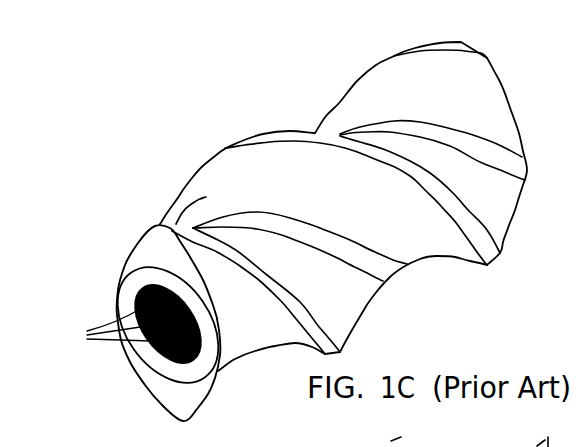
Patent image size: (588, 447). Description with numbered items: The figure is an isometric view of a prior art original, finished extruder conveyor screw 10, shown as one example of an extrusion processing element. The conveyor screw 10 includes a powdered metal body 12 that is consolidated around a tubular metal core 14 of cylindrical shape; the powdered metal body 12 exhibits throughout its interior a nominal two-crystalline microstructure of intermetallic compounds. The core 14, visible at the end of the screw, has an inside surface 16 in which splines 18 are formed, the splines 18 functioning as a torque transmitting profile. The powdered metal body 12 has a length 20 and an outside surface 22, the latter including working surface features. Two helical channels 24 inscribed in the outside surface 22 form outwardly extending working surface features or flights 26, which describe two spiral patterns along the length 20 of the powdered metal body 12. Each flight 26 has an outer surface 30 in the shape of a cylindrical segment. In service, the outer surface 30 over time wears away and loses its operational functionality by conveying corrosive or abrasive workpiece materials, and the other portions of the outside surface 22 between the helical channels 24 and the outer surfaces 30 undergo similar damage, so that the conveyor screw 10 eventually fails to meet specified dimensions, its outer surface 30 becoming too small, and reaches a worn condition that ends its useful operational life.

The extruder conveyor screw 10 is at (276, 103).
The powdered metal body 12 is at (145, 249).
The tubular metal core 14 is at (130, 291).
The inside surface 16 is at (150, 344).
The splines 18 is at (100, 327).
The length 20 is at (412, 436).
The outside surface 22 is at (494, 110).
The helical channels 24 is at (260, 334).
The flights 26 is at (192, 204).
The outer surface 30 is at (370, 152).